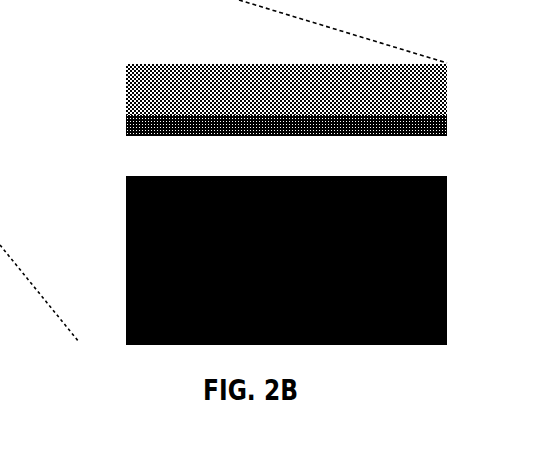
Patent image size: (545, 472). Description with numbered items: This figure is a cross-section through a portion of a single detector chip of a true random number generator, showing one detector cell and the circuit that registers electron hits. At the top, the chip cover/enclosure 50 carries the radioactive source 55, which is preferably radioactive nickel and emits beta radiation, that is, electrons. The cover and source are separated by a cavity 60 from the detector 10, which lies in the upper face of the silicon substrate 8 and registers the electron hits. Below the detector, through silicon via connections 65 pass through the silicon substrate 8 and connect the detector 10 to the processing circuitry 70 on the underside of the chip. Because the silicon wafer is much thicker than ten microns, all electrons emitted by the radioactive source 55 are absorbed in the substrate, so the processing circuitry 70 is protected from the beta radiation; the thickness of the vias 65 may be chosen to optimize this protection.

The silicon substrate 8 is at (279, 279).
The detector 10 is at (162, 197).
The chip cover/enclosure 50 is at (128, 77).
The radioactive source 55 is at (128, 128).
The cavity 60 is at (134, 160).
The through silicon via connections 65 is at (381, 253).
The processing circuitry 70 is at (332, 337).